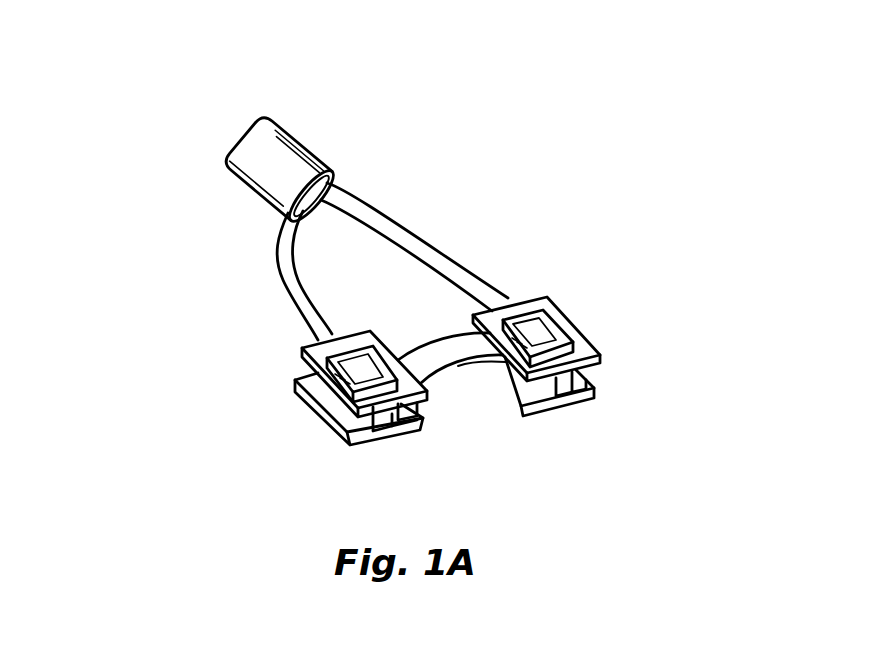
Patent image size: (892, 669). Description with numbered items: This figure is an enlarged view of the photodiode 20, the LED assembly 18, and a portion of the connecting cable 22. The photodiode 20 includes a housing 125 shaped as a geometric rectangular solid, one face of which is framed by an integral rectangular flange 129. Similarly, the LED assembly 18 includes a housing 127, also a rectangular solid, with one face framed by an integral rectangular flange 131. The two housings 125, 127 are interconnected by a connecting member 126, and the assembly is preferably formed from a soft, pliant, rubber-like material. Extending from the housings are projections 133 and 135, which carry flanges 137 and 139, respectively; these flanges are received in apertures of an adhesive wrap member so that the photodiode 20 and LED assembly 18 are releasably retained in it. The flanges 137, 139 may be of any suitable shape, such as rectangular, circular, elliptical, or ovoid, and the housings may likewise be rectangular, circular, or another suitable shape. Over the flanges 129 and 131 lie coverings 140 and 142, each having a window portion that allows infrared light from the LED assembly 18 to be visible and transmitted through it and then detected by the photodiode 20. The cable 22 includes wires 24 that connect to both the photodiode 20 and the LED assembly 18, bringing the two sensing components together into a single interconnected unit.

The LED assembly 18 is at (631, 358).
The photodiode 20 is at (276, 397).
The cable 22 is at (280, 157).
The wires 24 is at (373, 220).
The housing 125 is at (337, 407).
The connecting member 126 is at (458, 358).
The housing 127 is at (583, 313).
The rectangular flange 129 is at (297, 378).
The rectangular flange 131 is at (533, 338).
The projection 133 is at (383, 437).
The projection 135 is at (567, 400).
The flange 137 is at (407, 433).
The flange 139 is at (537, 410).
The covering 140 is at (360, 338).
The covering 142 is at (525, 307).